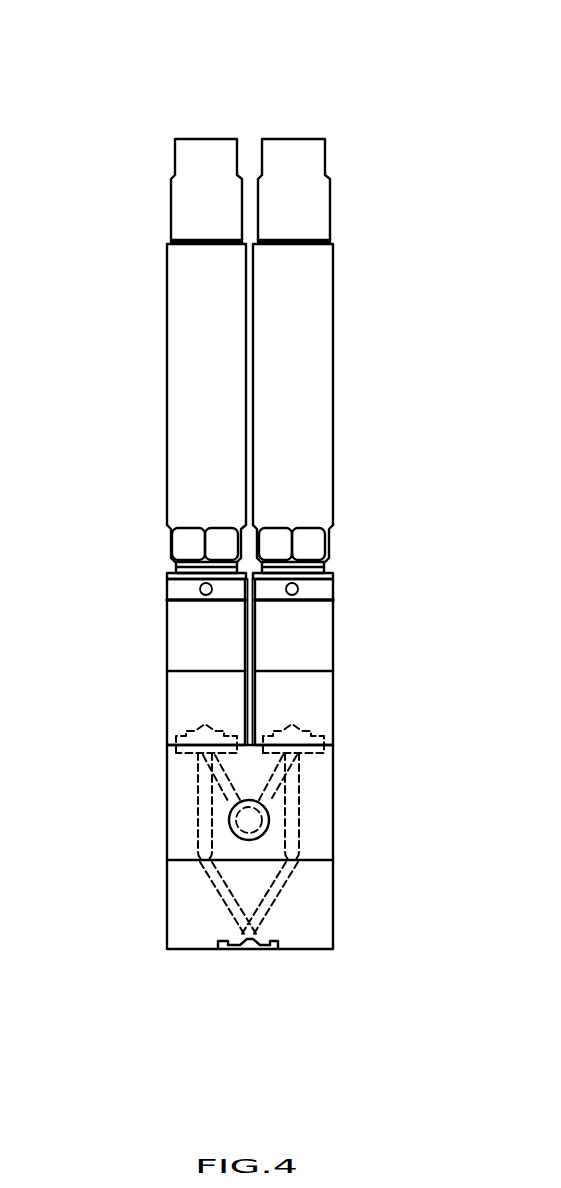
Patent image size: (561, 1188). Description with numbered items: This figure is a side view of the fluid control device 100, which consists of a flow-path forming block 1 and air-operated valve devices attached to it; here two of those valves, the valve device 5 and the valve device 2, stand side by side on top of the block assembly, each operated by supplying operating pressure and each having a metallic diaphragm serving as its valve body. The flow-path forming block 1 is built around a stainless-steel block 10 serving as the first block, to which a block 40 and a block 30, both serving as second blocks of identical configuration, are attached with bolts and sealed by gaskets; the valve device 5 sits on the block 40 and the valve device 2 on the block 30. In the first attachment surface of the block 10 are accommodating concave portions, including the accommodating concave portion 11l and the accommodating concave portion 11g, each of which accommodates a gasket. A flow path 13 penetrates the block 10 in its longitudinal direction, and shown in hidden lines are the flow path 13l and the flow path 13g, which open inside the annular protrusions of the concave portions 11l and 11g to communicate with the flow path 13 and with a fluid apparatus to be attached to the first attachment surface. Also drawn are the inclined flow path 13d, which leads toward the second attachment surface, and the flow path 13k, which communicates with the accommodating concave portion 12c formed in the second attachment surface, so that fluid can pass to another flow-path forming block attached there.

The fluid control device 100 is at (403, 108).
The valve device 5 is at (193, 417).
The valve device 2 is at (305, 418).
The flow-path forming block 1 is at (439, 685).
The block 40 is at (200, 697).
The block 30 is at (300, 697).
The block 10 is at (188, 815).
The accommodating concave portion 11l is at (176, 741).
The accommodating concave portion 11g is at (333, 741).
The flow path 13l is at (198, 789).
The flow path 13g is at (300, 790).
The flow path 13d is at (300, 822).
The flow path 13k is at (232, 832).
The flow path 13 is at (200, 862).
The accommodating concave portion 12c is at (250, 950).